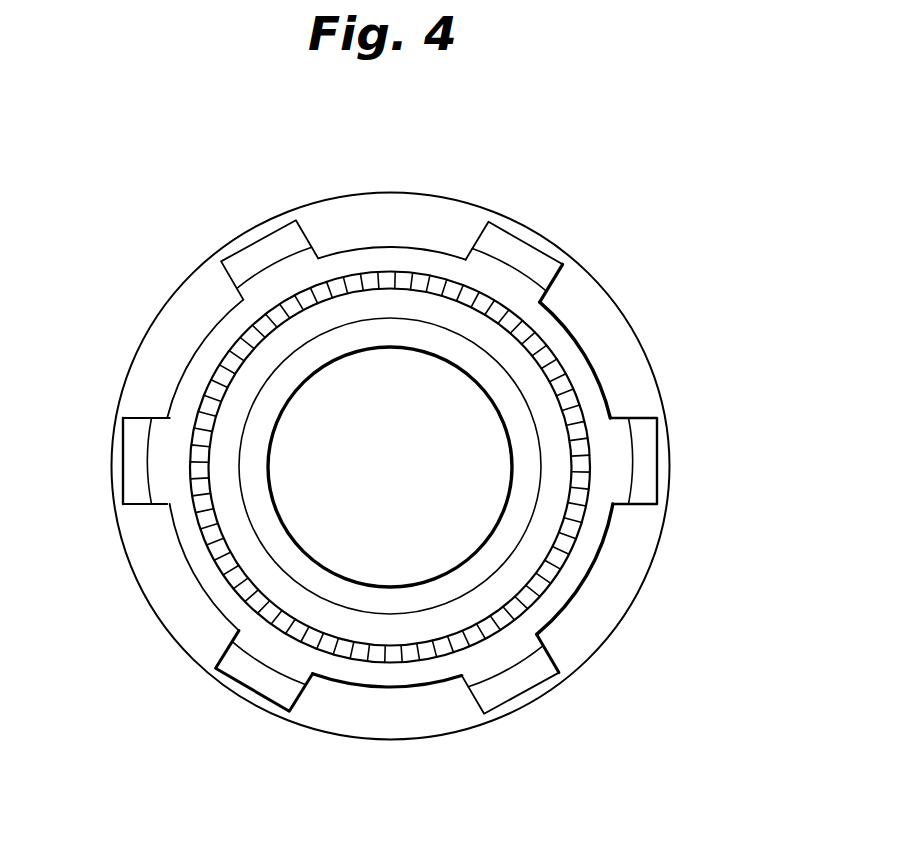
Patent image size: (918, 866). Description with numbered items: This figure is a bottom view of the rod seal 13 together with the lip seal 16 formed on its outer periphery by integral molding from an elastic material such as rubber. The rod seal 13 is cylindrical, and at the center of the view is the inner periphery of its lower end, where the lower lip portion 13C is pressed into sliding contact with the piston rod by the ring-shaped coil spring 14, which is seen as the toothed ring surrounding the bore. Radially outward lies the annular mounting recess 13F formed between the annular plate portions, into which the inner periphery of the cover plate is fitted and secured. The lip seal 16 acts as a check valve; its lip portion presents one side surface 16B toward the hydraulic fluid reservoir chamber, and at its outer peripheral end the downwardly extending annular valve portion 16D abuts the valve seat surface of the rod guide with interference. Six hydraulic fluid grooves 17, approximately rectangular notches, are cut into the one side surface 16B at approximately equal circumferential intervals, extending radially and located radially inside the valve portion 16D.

The rod seal 13 is at (630, 306).
The lower lip portion 13C is at (265, 527).
The annular mounting recess 13F is at (580, 572).
The ring-shaped coil spring 14 is at (236, 348).
The lip seal 16 is at (448, 467).
The one side surface 16B is at (384, 720).
The valve portion 16D is at (112, 470).
The hydraulic fluid grooves 17 is at (512, 250).